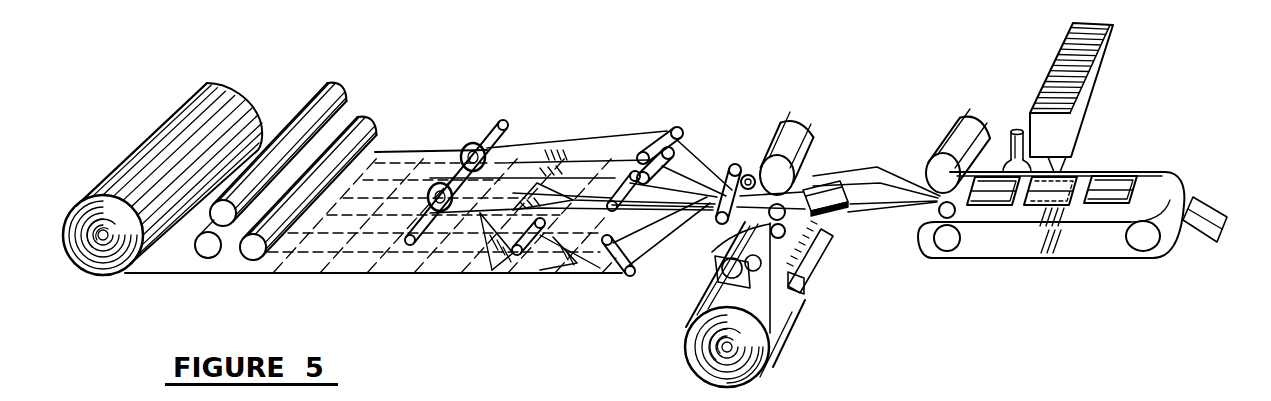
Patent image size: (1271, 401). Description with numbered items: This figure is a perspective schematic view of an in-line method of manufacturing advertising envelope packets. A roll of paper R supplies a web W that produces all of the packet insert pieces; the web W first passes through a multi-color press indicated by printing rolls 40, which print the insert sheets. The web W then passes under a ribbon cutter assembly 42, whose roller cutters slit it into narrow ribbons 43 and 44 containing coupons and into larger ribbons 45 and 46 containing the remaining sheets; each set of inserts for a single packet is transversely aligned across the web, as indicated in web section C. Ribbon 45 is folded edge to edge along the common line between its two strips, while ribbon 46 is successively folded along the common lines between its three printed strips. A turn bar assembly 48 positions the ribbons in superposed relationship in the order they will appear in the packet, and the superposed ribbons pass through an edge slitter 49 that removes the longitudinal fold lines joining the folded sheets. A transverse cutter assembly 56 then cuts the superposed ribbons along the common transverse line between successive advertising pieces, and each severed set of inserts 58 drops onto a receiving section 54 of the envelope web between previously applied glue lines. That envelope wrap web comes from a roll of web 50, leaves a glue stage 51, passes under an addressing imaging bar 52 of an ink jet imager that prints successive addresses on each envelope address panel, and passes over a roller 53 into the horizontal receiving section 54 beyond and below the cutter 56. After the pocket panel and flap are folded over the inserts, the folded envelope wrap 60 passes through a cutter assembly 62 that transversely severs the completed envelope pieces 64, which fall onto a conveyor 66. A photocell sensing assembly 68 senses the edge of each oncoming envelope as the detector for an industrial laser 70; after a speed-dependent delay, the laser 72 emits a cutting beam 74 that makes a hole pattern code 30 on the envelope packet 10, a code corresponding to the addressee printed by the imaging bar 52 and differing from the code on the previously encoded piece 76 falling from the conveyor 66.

The roll of paper R is at (160, 122).
The web W is at (167, 265).
The web section C is at (410, 140).
The printing rolls 40 is at (226, 262).
The ribbon cutter assembly 42 is at (470, 140).
The ribbon 43 is at (536, 148).
The ribbon 44 is at (592, 160).
The ribbon 45 is at (548, 205).
The ribbon 46 is at (462, 270).
The turn bar assembly 48 is at (662, 124).
The edge slitter 49 is at (745, 176).
The roll of web 50 is at (687, 343).
The glue stage 51 is at (708, 287).
The addressing imaging bar 52 is at (822, 258).
The roller 53 is at (752, 236).
The receiving section 54 is at (880, 172).
The transverse cutter assembly 56 is at (792, 124).
The set of inserts 58 is at (831, 183).
The folded envelope wrap 60 is at (915, 210).
The cutter assembly 62 is at (955, 125).
The envelope pieces 64 is at (995, 207).
The conveyor 66 is at (933, 250).
The photocell sensing assembly 68 is at (1013, 130).
The industrial laser 70 is at (1065, 58).
The laser 72 is at (1075, 162).
The envelope packet 10 is at (1133, 172).
The cutting beam 74 is at (1048, 210).
The previously encoded piece 76 is at (1205, 207).
The hole pattern code 30 is at (1110, 205).